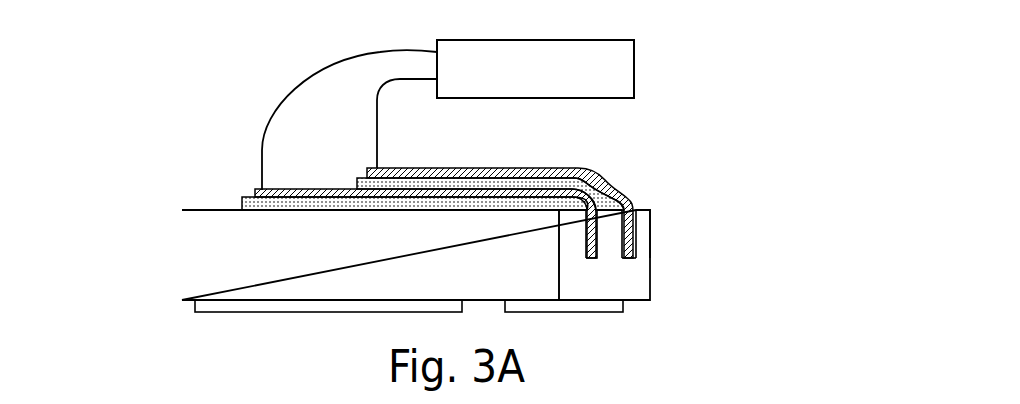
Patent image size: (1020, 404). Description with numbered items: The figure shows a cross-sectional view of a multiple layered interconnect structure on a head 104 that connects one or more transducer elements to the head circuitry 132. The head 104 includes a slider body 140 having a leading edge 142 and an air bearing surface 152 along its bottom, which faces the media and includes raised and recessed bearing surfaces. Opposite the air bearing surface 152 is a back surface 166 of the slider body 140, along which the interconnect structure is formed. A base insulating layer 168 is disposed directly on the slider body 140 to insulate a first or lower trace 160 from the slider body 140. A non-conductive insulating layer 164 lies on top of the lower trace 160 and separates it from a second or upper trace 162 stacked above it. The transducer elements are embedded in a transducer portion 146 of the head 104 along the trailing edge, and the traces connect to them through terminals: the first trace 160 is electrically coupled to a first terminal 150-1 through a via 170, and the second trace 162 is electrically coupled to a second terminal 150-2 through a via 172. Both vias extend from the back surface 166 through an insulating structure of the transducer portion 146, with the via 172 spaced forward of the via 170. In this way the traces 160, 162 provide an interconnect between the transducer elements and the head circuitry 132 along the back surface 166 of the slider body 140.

The head 104 is at (168, 160).
The head circuitry 132 is at (634, 68).
The slider body 140 is at (419, 255).
The leading edge 142 is at (182, 247).
The transducer portion 146 is at (642, 222).
The first terminal 150-1 is at (591, 259).
The second terminal 150-2 is at (625, 259).
The air bearing surface 152 is at (229, 319).
The first or lower trace 160 is at (328, 195).
The second or upper trace 162 is at (478, 185).
The non-conductive insulating layer 164 is at (427, 178).
The back surface 166 is at (215, 210).
The base insulating layer 168 is at (287, 203).
The via 170 is at (587, 238).
The via 172 is at (633, 238).